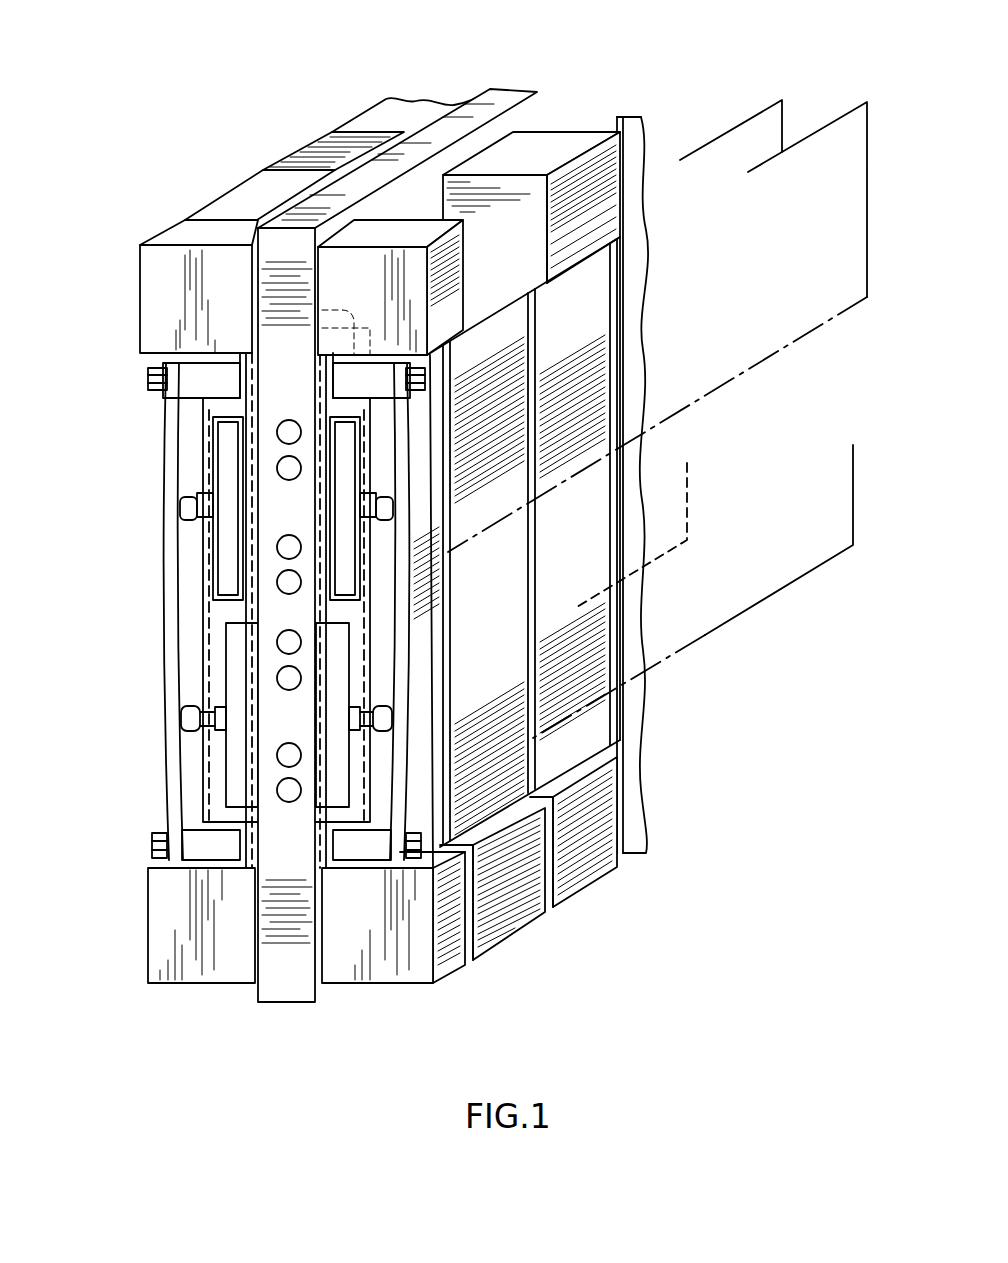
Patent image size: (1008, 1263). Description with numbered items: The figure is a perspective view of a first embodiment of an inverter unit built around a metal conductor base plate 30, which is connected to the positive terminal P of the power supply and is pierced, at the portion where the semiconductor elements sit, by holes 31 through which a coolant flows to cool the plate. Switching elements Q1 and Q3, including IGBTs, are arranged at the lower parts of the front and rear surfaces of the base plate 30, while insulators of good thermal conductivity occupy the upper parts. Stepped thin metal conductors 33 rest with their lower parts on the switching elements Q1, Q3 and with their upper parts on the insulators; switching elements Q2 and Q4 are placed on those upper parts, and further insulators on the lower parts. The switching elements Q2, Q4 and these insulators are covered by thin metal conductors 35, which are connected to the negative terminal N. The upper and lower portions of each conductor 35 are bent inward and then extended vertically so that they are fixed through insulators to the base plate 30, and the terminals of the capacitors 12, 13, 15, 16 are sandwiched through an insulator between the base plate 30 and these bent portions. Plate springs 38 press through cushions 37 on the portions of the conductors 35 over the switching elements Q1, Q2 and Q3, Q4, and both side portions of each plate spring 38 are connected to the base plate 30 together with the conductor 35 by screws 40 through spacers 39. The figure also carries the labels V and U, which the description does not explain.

The capacitor 12 is at (417, 297).
The capacitor 13 is at (157, 303).
The capacitor 15 is at (370, 975).
The capacitor 16 is at (198, 968).
The metal conductor base plate 30 is at (285, 990).
The holes 31 is at (292, 420).
The thin metal conductor 33 is at (238, 616).
The thin metal conductor 35 is at (204, 798).
The cushion 37 is at (180, 506).
The plate spring 38 is at (163, 580).
The spacer 39 is at (167, 412).
The screw 40 is at (148, 380).
The switching element Q1 is at (348, 656).
The switching element Q2 is at (360, 440).
The switching element Q3 is at (228, 763).
The switching element Q4 is at (212, 460).
The positive terminal P is at (535, 103).
The plate V is at (723, 132).
The plate U is at (827, 122).
The negative terminal N is at (817, 567).